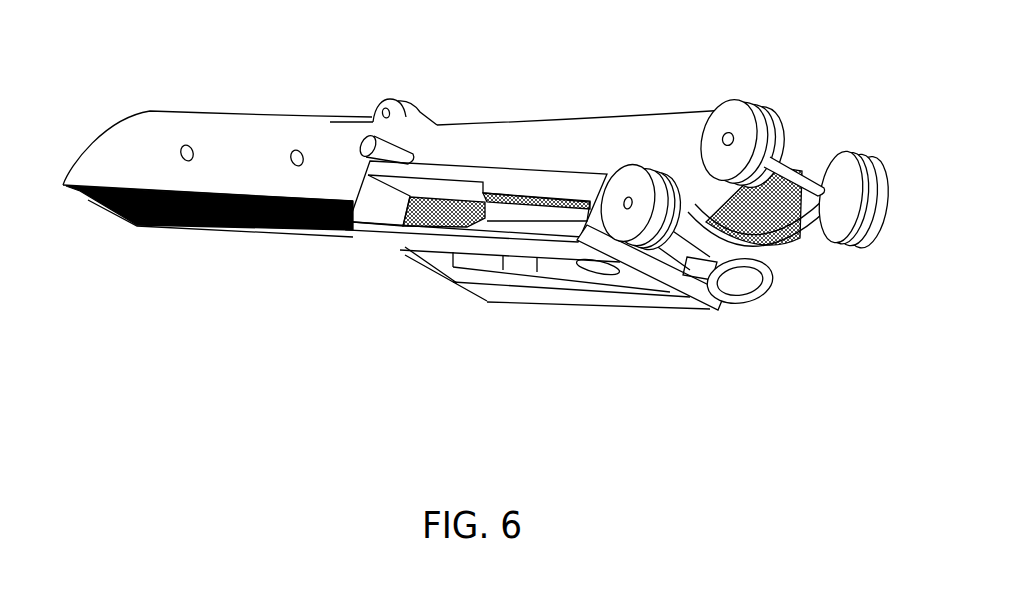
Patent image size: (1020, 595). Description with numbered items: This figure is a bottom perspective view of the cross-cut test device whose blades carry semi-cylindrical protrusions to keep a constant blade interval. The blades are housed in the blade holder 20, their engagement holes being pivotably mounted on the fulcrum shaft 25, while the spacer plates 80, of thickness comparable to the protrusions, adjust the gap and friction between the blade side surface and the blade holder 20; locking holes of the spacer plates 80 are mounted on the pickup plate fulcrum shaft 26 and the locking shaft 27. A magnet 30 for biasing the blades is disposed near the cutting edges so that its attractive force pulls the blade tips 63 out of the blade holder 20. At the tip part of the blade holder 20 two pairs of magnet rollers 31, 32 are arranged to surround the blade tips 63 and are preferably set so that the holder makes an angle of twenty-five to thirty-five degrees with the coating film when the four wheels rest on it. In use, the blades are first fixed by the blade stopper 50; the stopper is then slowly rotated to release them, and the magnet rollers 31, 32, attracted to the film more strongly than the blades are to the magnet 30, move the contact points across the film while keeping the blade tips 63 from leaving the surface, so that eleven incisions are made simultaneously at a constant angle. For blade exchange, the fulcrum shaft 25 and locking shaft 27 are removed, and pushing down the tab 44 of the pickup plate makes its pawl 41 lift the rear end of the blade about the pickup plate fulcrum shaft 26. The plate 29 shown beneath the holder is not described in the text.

The blade holder 20 is at (530, 133).
The fulcrum shaft 25 is at (395, 153).
The pickup plate fulcrum shaft 26 is at (296, 148).
The locking shaft 27 is at (186, 142).
The lower plate 29 is at (498, 293).
The magnet 30 is at (573, 272).
The magnet rollers 31 is at (870, 175).
The magnet rollers 32 is at (760, 283).
The pawl 41 is at (452, 238).
The tab 44 is at (92, 204).
The blade stopper 50 is at (358, 120).
The blade tips 63 is at (806, 210).
The spacer plates 80 is at (820, 232).